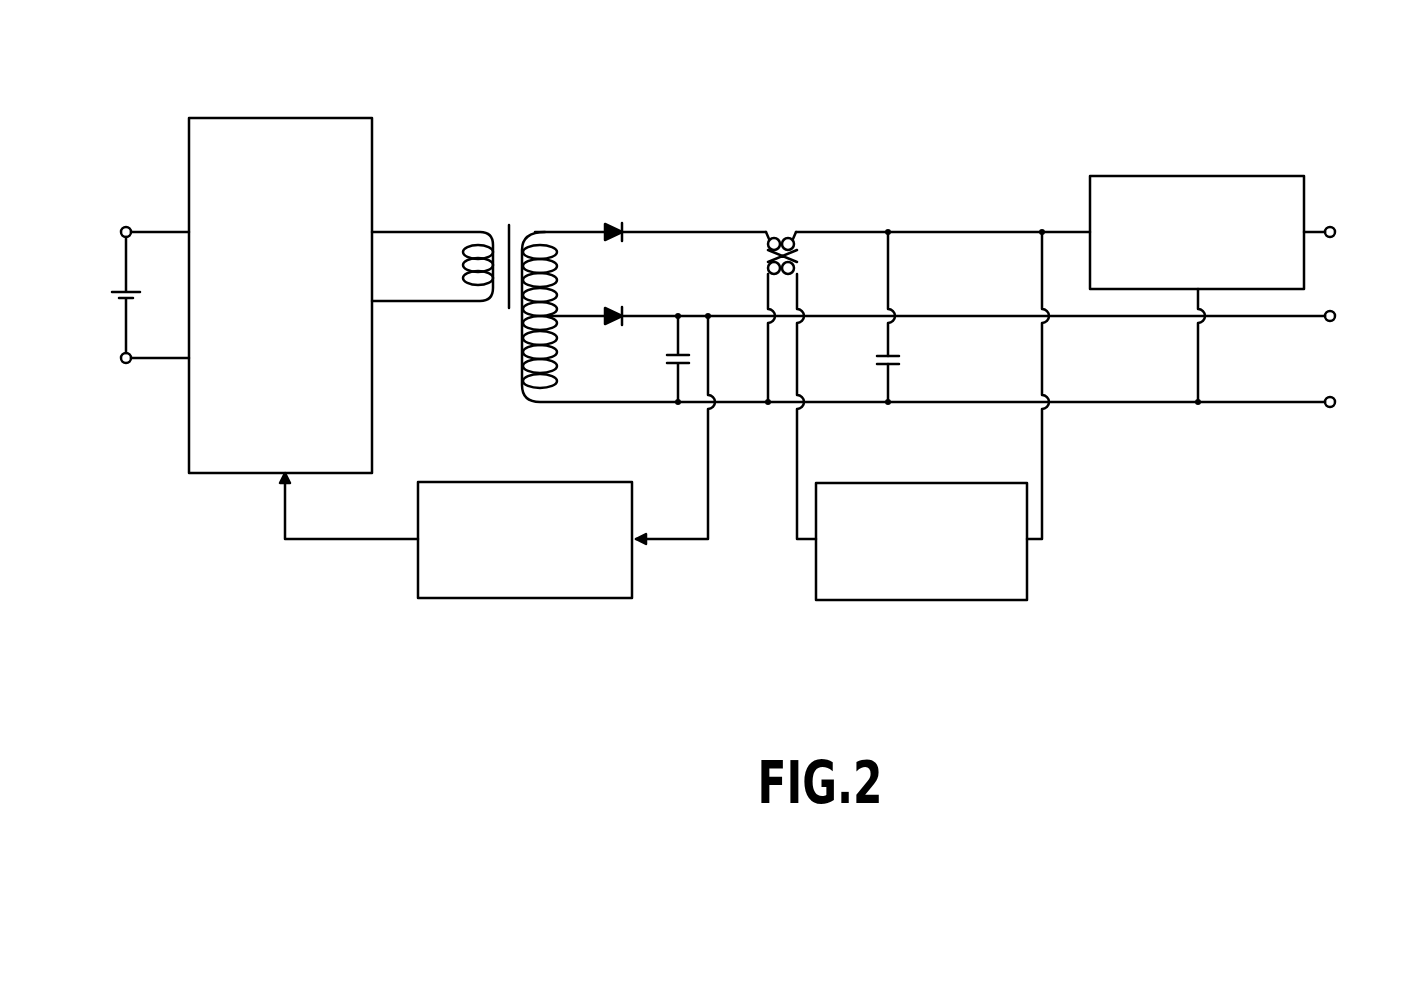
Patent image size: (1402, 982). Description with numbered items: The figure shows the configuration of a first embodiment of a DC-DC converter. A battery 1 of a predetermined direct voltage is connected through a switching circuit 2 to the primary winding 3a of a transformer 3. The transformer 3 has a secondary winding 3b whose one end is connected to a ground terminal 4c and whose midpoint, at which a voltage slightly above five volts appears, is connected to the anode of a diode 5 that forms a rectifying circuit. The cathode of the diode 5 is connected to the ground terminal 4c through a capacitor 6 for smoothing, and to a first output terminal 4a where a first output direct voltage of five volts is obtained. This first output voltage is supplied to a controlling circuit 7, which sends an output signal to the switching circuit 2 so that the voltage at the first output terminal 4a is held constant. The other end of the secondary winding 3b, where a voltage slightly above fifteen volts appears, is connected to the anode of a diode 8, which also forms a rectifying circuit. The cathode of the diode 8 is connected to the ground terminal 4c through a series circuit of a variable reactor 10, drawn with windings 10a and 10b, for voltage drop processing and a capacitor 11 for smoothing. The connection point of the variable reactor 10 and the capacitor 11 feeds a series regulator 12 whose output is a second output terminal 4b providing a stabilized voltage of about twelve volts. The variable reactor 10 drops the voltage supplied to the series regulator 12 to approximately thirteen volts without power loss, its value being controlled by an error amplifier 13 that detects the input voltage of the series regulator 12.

The battery 1 is at (130, 290).
The switching circuit 2 is at (241, 118).
The transformer 3 is at (511, 257).
The primary winding 3a is at (464, 285).
The secondary winding 3b is at (555, 308).
The first output terminal 4a is at (1355, 320).
The second output terminal 4b is at (1345, 235).
The ground terminal 4c is at (1354, 403).
The diode 5 is at (624, 313).
The capacitor 6 is at (667, 361).
The controlling circuit 7 is at (425, 598).
The diode 8 is at (624, 230).
The variable reactor 10 is at (789, 228).
The winding of variable reactor 10a is at (787, 233).
The winding of variable reactor 10b is at (768, 272).
The capacitor 11 is at (891, 366).
The series regulator 12 is at (1122, 176).
The error amplifier 13 is at (865, 600).